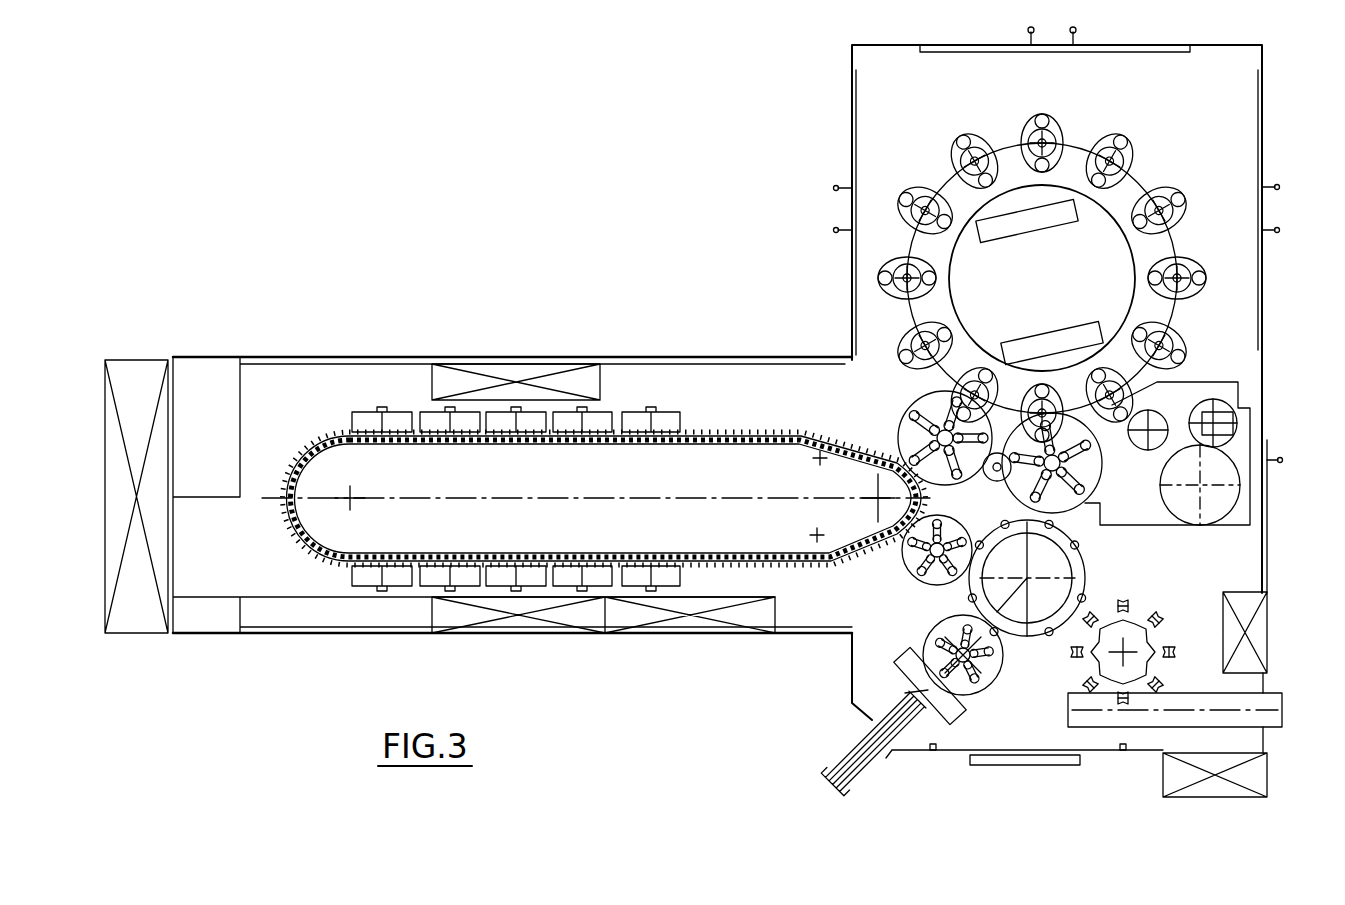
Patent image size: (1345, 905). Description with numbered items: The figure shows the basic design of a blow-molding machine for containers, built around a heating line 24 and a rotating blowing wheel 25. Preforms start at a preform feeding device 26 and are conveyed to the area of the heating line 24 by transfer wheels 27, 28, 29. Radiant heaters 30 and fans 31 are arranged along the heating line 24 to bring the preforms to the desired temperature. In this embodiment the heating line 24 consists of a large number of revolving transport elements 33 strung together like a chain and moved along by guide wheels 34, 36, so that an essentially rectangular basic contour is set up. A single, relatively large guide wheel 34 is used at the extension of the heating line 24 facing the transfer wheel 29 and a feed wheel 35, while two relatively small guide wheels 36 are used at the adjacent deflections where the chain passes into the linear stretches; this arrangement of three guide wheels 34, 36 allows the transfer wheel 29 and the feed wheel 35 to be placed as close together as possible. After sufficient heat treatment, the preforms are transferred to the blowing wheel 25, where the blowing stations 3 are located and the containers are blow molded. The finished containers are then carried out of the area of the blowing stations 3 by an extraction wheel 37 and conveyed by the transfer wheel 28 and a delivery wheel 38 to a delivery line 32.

The blowing station 3 is at (893, 263).
The heating line 24 is at (642, 385).
The blowing wheel 25 is at (980, 205).
The preform feeding device 26 is at (887, 753).
The transfer wheel 27 is at (975, 697).
The transfer wheel 28 is at (1027, 640).
The transfer wheel 29 is at (910, 583).
The radiant heater 30 is at (400, 412).
The fan 31 is at (510, 375).
The delivery line 32 is at (1270, 718).
The transport element 33 is at (320, 560).
The guide wheel 34 is at (352, 500).
The feed wheel 35 is at (930, 398).
The guide wheel 36 is at (820, 458).
The extraction wheel 37 is at (1085, 478).
The delivery wheel 38 is at (1135, 663).